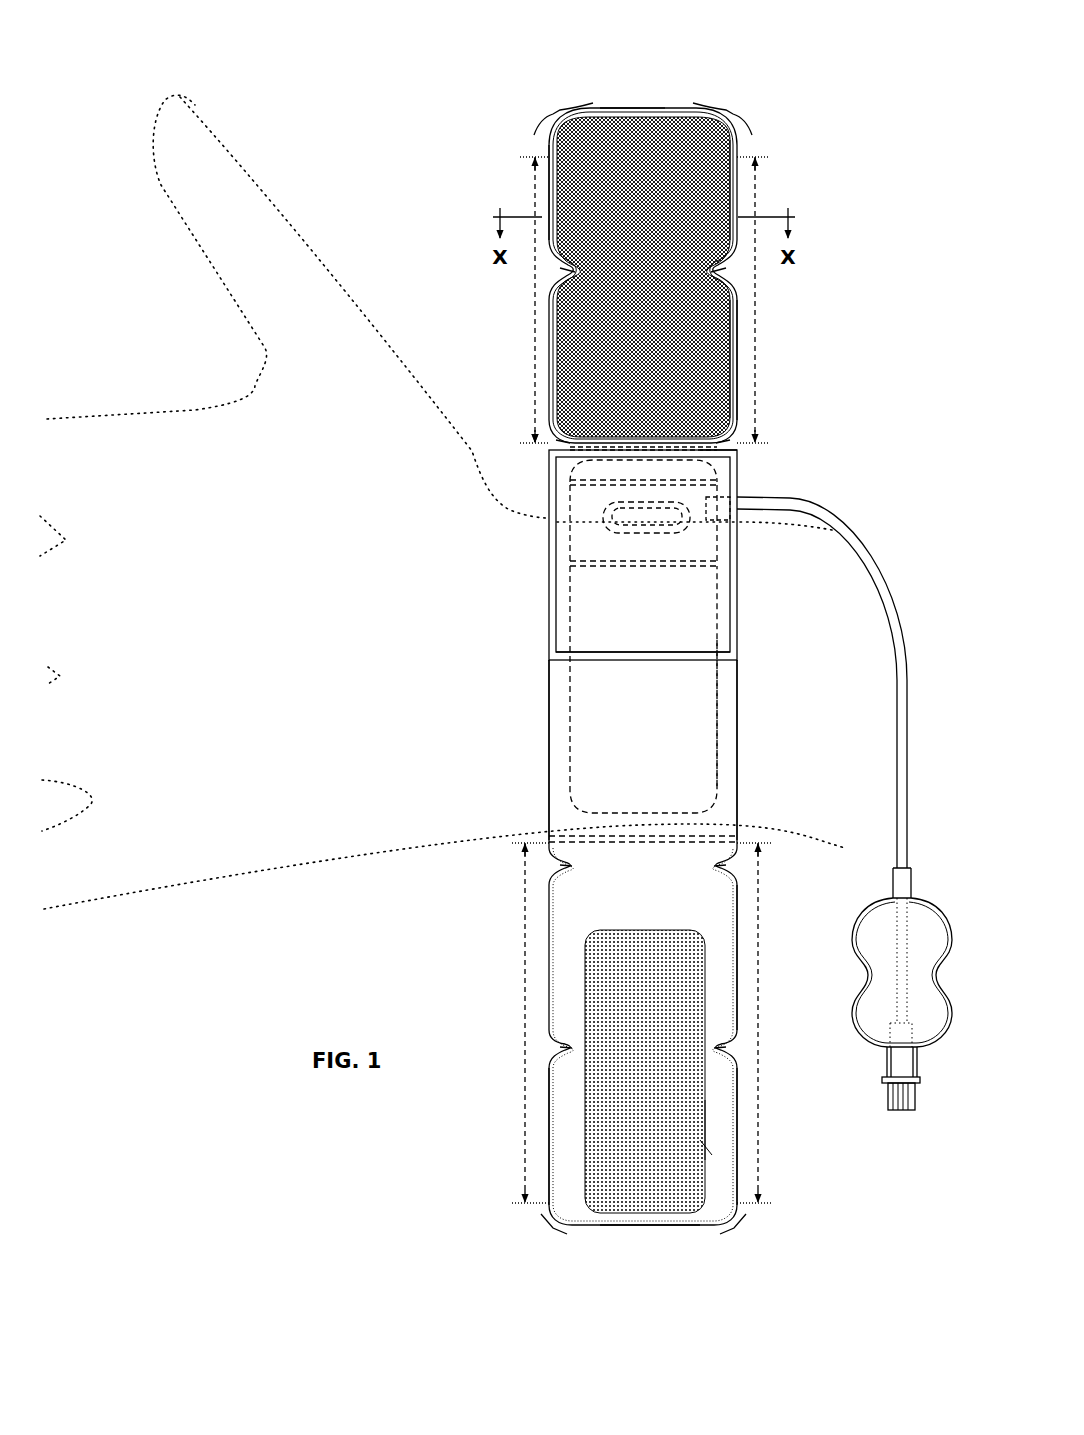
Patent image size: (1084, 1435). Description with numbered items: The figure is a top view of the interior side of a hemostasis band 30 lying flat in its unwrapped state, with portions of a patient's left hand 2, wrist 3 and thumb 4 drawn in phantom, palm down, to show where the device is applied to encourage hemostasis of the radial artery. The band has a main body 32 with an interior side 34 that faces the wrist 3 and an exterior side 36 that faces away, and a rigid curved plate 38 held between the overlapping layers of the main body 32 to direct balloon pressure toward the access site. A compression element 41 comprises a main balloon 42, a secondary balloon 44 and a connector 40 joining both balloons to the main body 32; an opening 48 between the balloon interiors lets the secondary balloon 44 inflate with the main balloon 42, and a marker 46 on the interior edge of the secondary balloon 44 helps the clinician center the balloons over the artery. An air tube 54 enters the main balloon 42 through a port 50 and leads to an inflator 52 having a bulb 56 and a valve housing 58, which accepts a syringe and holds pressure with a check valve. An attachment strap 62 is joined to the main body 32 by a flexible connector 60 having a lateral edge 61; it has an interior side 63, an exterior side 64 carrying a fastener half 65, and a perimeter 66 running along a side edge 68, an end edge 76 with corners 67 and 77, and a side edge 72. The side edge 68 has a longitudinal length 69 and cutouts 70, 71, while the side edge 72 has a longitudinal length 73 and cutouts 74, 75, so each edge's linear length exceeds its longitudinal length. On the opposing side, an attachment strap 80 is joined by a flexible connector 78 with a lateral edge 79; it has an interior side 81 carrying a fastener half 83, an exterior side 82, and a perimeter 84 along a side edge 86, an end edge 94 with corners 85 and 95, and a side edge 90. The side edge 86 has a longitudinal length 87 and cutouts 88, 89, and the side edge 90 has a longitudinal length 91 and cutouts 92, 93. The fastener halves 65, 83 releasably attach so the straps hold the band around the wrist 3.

The left hand 2 is at (178, 842).
The wrist 3 is at (547, 554).
The thumb 4 is at (277, 250).
The hemostasis band 30 is at (862, 146).
The main body 32 is at (552, 752).
The interior side 34 is at (731, 686).
The exterior side 36 is at (730, 733).
The curved plate 38 is at (588, 700).
The connector 40 is at (550, 463).
The compression element 41 is at (727, 476).
The main balloon 42 is at (583, 658).
The secondary balloon 44 is at (600, 563).
The marker 46 is at (645, 567).
The opening 48 is at (665, 527).
The port 50 is at (743, 515).
The inflator 52 is at (852, 825).
The air tube 54 is at (863, 553).
The bulb 56 is at (925, 905).
The valve housing 58 is at (906, 1112).
The flexible connector 60 is at (737, 460).
The lateral edge 61 is at (625, 445).
The attachment strap 62 is at (663, 112).
The interior side 63 is at (710, 317).
The exterior side 64 is at (718, 364).
The fastener half 65 is at (707, 202).
The perimeter 66 is at (623, 106).
The corner 67 is at (563, 111).
The side edge 68 is at (546, 193).
The longitudinal length 69 is at (535, 328).
The cutout 70 is at (570, 272).
The cutout 71 is at (563, 442).
The side edge 72 is at (744, 335).
The longitudinal length 73 is at (757, 203).
The cutout 74 is at (714, 272).
The cutout 75 is at (717, 442).
The end edge 76 is at (652, 103).
The corner 77 is at (722, 111).
The flexible connector 78 is at (560, 840).
The lateral edge 79 is at (642, 845).
The attachment strap 80 is at (566, 903).
The interior side 81 is at (722, 1131).
The exterior side 82 is at (719, 1150).
The fastener half 83 is at (598, 1143).
The perimeter 84 is at (737, 918).
The corner 85 is at (548, 1233).
The side edge 86 is at (547, 1103).
The longitudinal length 87 is at (523, 1017).
The cutout 88 is at (572, 1046).
The cutout 89 is at (570, 864).
The side edge 90 is at (742, 1080).
The longitudinal length 91 is at (760, 1032).
The cutout 92 is at (722, 1047).
The cutout 93 is at (740, 867).
The end edge 94 is at (655, 1233).
The corner 95 is at (739, 1231).